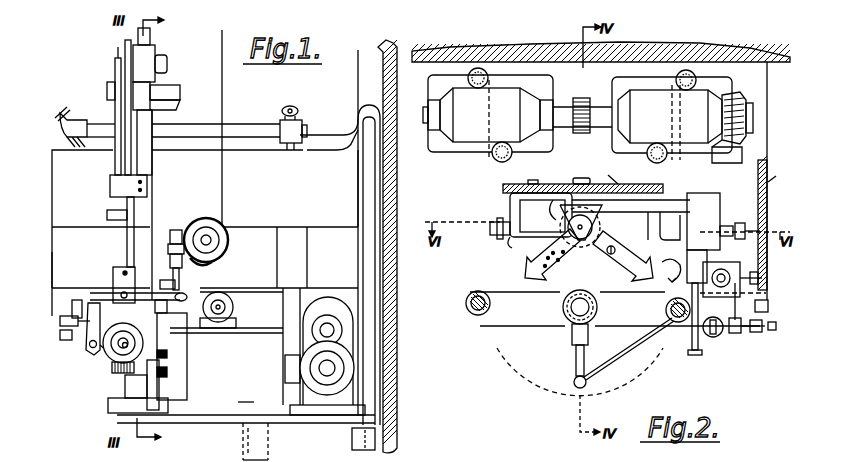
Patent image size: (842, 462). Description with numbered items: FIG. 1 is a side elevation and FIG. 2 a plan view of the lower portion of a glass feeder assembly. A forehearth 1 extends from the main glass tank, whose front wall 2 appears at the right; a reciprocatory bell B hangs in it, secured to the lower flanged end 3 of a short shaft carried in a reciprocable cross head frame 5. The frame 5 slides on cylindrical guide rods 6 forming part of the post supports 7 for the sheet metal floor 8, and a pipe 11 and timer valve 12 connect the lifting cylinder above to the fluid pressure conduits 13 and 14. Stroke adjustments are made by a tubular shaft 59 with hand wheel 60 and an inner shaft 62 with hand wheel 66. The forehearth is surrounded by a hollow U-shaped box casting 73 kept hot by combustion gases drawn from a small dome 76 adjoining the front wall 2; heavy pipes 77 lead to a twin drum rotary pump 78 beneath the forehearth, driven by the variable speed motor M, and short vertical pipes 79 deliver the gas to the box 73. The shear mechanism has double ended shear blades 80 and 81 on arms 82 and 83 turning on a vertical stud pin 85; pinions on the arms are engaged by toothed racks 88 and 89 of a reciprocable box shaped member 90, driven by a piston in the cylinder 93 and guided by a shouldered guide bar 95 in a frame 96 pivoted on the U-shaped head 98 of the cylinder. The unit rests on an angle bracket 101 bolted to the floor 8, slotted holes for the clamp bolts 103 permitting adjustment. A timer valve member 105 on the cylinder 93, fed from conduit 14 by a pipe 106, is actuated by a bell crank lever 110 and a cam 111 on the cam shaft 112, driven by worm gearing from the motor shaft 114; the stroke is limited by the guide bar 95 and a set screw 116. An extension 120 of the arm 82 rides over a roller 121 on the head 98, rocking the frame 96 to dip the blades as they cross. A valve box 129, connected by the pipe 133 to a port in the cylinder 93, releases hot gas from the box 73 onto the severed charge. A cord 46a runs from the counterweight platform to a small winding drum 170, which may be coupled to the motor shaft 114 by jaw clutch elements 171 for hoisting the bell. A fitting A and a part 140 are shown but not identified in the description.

In FIG. 1, the forehearth 1 is at (54, 181).
In FIG. 1, the front wall of the main glass tank 2 is at (384, 77).
In FIG. 2, the front wall of the main glass tank 2 is at (745, 60).
In FIG. 1, the lower flanged end 3 is at (180, 90).
In FIG. 1, the reciprocable cross head frame 5 is at (167, 65).
In FIG. 1, the cylindrical guide rods 6 is at (150, 36).
In FIG. 1, the post supports 7 is at (127, 383).
In FIG. 2, the post supports 7 is at (478, 315).
In FIG. 1, the sheet metal floor 8 is at (240, 290).
In FIG. 1, the pipe 11 is at (125, 105).
In FIG. 1, the timer valve 12 is at (124, 271).
In FIG. 2, the timer valve 12 is at (712, 338).
In FIG. 1, the fluid pressure conduit 13 is at (114, 281).
In FIG. 2, the fluid pressure conduit 13 is at (772, 331).
In FIG. 1, the fluid pressure conduit 14 is at (114, 292).
In FIG. 2, the fluid pressure conduit 14 is at (736, 334).
In FIG. 1, the cord 46a is at (222, 176).
In FIG. 1, the tubular shaft 59 is at (115, 70).
In FIG. 1, the hand wheel 60 is at (112, 198).
In FIG. 1, the shaft 62 is at (117, 50).
In FIG. 1, the hand wheel 66 is at (108, 215).
In FIG. 1, the hollow U-shaped box casting 73 is at (53, 253).
In FIG. 1, the small dome 76 is at (356, 116).
In FIG. 1, the heavy pipes 77 is at (360, 191).
In FIG. 2, the heavy pipes 77 is at (477, 68).
In FIG. 1, the rotary pump 78 is at (331, 302).
In FIG. 2, the rotary pump 78 is at (516, 120).
In FIG. 1, the short vertical pipes 79 is at (284, 309).
In FIG. 2, the short vertical pipes 79 is at (493, 156).
In FIG. 2, the shear blade 80 is at (500, 278).
In FIG. 2, the shear blade 81 is at (679, 264).
In FIG. 2, the arm 82 is at (552, 264).
In FIG. 2, the arm 83 is at (623, 265).
In FIG. 2, the vertical stud pin 85 is at (580, 240).
In FIG. 2, the toothed rack 88 is at (640, 199).
In FIG. 2, the toothed rack 89 is at (592, 238).
In FIG. 2, the reciprocable box shaped member 90 is at (554, 210).
In FIG. 1, the cylinder 93 is at (226, 318).
In FIG. 2, the cylinder 93 is at (712, 218).
In FIG. 2, the guide bar 95 is at (490, 231).
In FIG. 2, the frame 96 is at (663, 212).
In FIG. 2, the U-shaped head 98 is at (512, 206).
In FIG. 2, the angle bracket 101 is at (503, 189).
In FIG. 2, the clamp bolts 103 is at (532, 183).
In FIG. 1, the timer valve member 105 is at (228, 328).
In FIG. 2, the timer valve member 105 is at (720, 246).
In FIG. 1, the pipe 106 is at (162, 281).
In FIG. 2, the pipe 106 is at (768, 305).
In FIG. 1, the bell crank lever 110 is at (88, 335).
In FIG. 2, the bell crank lever 110 is at (697, 357).
In FIG. 1, the cam 111 is at (102, 352).
In FIG. 1, the cam shaft 112 is at (130, 336).
In FIG. 1, the motor shaft 114 is at (112, 370).
In FIG. 2, the set screw 116 is at (766, 252).
In FIG. 2, the extension 120 is at (609, 171).
In FIG. 2, the roller 121 is at (583, 178).
In FIG. 1, the valve box 129 is at (55, 301).
In FIG. 2, the valve box 129 is at (574, 381).
In FIG. 1, the pipe 133 is at (60, 322).
In FIG. 2, the pipe 133 is at (632, 362).
In FIG. 1, the block 140 is at (60, 336).
In FIG. 1, the small winding drum 170 is at (206, 218).
In FIG. 1, the jaw clutch elements 171 is at (170, 230).
In FIG. 1, the valve A is at (58, 114).
In FIG. 1, the reciprocatory bell B is at (163, 118).
In FIG. 1, the variable speed motor M is at (246, 395).
In FIG. 2, the variable speed motor M is at (773, 223).